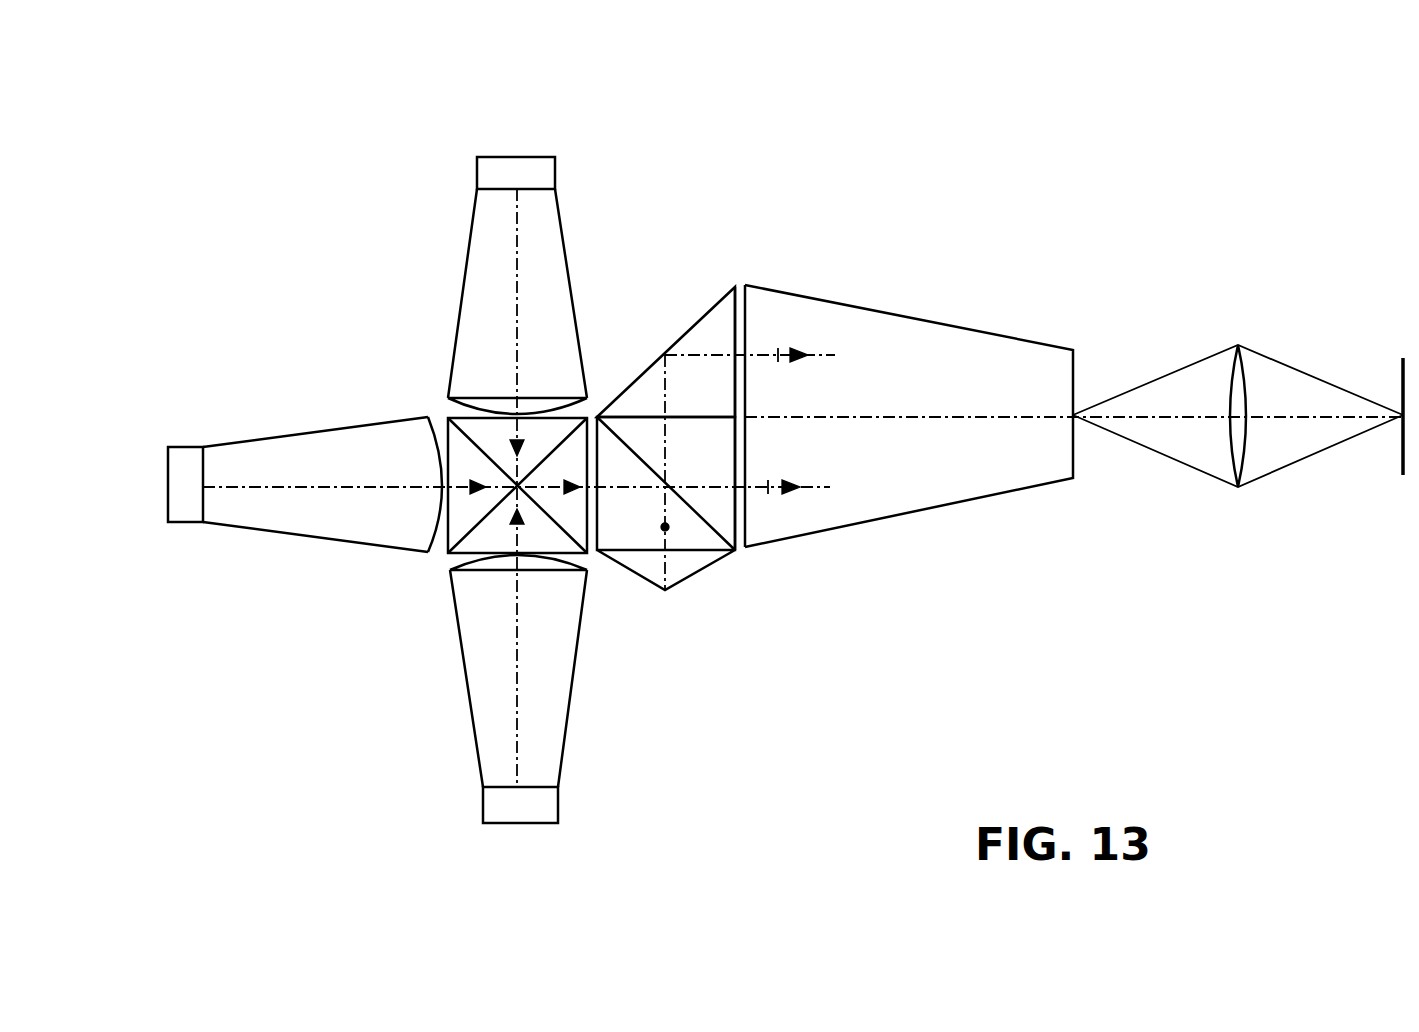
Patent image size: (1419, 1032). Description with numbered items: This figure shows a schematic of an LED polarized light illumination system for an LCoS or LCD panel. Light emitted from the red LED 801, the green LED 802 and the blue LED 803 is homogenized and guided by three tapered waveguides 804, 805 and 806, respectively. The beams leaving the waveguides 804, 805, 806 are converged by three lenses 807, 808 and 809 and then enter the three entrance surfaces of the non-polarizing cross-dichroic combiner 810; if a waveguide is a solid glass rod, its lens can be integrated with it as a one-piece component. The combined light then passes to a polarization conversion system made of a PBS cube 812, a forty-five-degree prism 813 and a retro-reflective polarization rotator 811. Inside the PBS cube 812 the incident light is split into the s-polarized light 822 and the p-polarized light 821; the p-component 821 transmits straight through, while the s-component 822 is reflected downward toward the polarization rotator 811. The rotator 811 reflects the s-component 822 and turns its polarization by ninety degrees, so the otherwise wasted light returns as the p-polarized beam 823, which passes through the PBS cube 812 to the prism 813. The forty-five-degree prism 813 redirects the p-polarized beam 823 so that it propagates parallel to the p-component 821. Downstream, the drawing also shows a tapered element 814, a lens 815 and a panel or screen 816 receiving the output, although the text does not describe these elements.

The red LED 801 is at (500, 180).
The green LED 802 is at (186, 522).
The blue LED 803 is at (490, 808).
The tapered waveguide 804 is at (488, 300).
The tapered waveguide 805 is at (315, 512).
The tapered waveguide 806 is at (555, 660).
The lens 807 is at (448, 416).
The lens 808 is at (432, 553).
The lens 809 is at (557, 572).
The non-polarizing cross-dichroic combiner 810 is at (590, 412).
The retro-reflective polarization rotator 811 is at (673, 590).
The PBS cube 812 is at (615, 470).
The 45-degree prism 813 is at (703, 347).
The tapered light guide 814 is at (1023, 470).
The projection lens 815 is at (1240, 345).
The screen 816 is at (1400, 370).
The p-polarized light 821 is at (770, 497).
The s-polarized light 822 is at (668, 528).
The p-polarized beam 823 is at (790, 345).